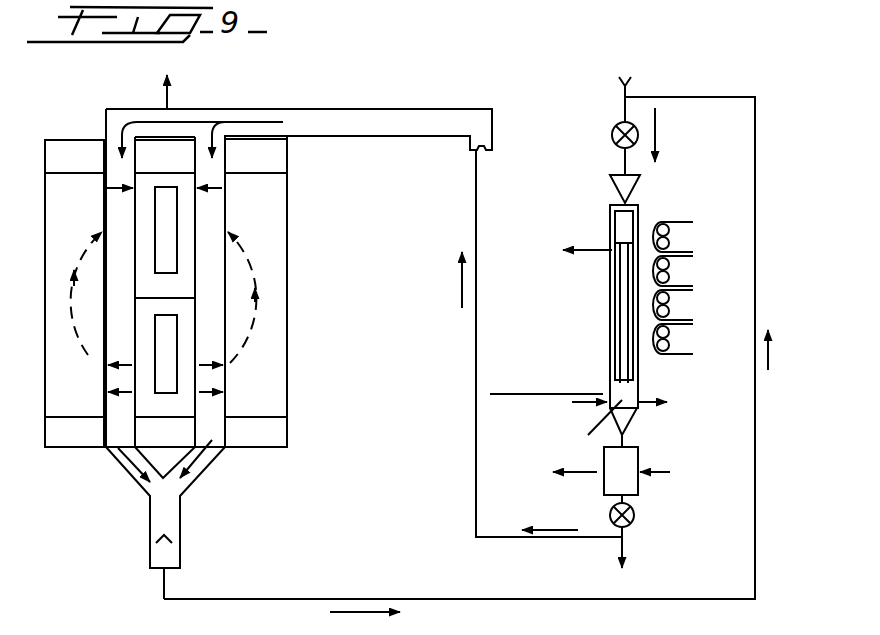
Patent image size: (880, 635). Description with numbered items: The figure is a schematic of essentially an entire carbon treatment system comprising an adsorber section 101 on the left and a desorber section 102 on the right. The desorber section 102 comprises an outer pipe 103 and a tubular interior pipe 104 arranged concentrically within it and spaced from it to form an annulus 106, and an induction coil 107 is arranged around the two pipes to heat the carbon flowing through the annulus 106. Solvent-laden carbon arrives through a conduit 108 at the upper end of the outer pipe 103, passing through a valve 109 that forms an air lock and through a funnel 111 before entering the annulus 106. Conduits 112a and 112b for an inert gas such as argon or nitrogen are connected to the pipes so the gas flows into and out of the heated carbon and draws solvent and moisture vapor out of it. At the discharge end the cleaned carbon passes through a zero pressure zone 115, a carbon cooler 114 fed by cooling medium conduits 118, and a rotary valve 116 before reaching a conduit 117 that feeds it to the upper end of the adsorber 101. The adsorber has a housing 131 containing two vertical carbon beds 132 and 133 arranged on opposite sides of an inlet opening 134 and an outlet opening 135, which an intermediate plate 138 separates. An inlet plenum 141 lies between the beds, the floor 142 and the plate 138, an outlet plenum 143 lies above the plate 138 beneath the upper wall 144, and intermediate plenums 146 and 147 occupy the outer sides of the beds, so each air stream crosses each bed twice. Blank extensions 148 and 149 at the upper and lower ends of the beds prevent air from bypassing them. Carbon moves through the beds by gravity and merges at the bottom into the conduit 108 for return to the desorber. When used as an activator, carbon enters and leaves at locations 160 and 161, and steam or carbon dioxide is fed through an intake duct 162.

The adsorber section 101 is at (108, 500).
The desorber section 102 is at (590, 112).
The outer pipe 103 is at (608, 293).
The tubular interior pipe 104 is at (640, 207).
The annulus 106 is at (608, 273).
The induction coil 107 is at (695, 280).
The conduit 108 is at (733, 97).
The valve 109 is at (611, 135).
The funnel 111 is at (611, 187).
The inert gas conduit 112a is at (637, 380).
The inert gas outlet conduit 112b is at (643, 408).
The carbon cooler 114 is at (638, 494).
The zero pressure zone 115 is at (590, 428).
The rotary valve 116 is at (631, 525).
The conduit 117 is at (476, 430).
The cooling medium conduits 118 is at (657, 472).
The housing 131 is at (287, 227).
The vertical carbon bed 132 is at (232, 188).
The vertical carbon bed 133 is at (96, 205).
The inlet opening 134 is at (170, 393).
The outlet opening 135 is at (178, 212).
The intermediate plate 138 is at (185, 296).
The inlet plenum 141 is at (143, 337).
The floor 142 is at (155, 415).
The outlet plenum 143 is at (148, 227).
The upper wall 144 is at (262, 172).
The intermediate plenum 146 is at (58, 332).
The intermediate plenum 147 is at (262, 355).
The blank extension 148 is at (203, 157).
The blank extension 149 is at (133, 430).
The carbon introduction location 160 is at (625, 75).
The carbon removal location 161 is at (618, 552).
The intake duct 162 is at (513, 395).